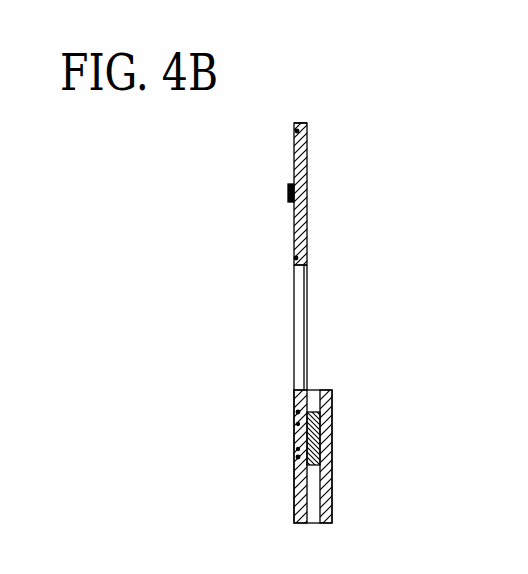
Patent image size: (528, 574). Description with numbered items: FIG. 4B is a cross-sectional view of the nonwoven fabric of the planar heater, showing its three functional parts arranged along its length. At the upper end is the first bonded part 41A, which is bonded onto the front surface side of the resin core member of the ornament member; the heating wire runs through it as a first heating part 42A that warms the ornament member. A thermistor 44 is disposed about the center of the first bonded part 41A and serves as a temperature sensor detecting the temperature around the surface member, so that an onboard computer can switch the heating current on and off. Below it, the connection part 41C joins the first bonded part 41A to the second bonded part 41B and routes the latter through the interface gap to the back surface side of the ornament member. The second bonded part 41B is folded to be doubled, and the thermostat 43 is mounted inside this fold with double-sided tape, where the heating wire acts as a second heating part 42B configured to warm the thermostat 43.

The first bonded part 41A is at (321, 265).
The second bonded part 41B is at (352, 392).
The connection part 41C is at (321, 267).
The first heating part 42A is at (297, 131).
The second heating part 42B is at (298, 412).
The thermostat 43 is at (298, 440).
The thermistor 44 is at (288, 190).